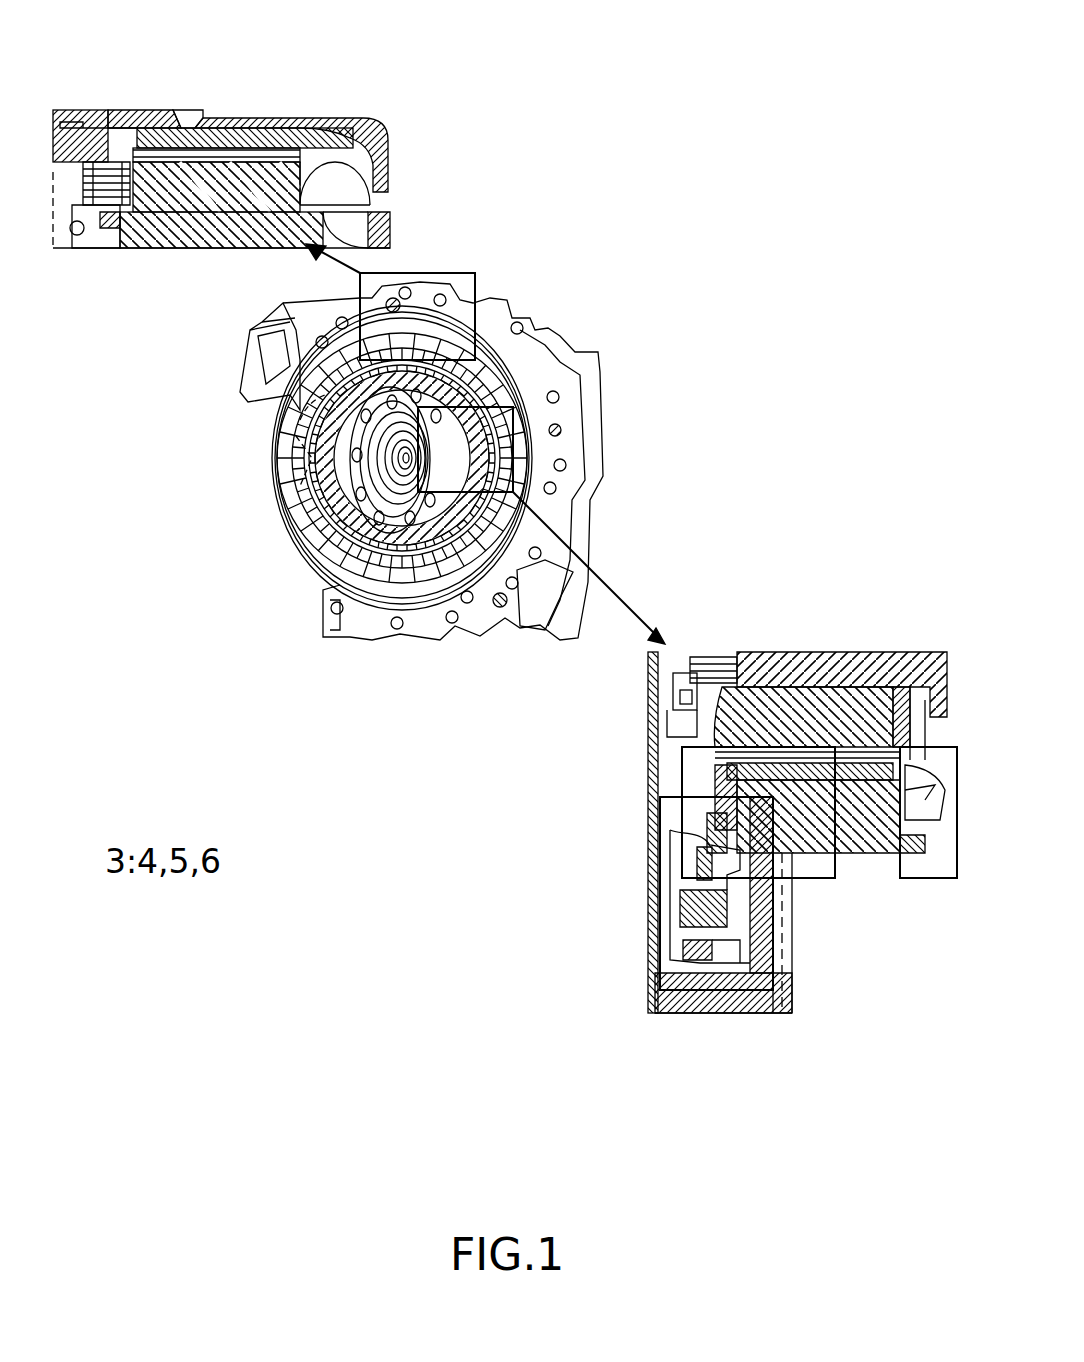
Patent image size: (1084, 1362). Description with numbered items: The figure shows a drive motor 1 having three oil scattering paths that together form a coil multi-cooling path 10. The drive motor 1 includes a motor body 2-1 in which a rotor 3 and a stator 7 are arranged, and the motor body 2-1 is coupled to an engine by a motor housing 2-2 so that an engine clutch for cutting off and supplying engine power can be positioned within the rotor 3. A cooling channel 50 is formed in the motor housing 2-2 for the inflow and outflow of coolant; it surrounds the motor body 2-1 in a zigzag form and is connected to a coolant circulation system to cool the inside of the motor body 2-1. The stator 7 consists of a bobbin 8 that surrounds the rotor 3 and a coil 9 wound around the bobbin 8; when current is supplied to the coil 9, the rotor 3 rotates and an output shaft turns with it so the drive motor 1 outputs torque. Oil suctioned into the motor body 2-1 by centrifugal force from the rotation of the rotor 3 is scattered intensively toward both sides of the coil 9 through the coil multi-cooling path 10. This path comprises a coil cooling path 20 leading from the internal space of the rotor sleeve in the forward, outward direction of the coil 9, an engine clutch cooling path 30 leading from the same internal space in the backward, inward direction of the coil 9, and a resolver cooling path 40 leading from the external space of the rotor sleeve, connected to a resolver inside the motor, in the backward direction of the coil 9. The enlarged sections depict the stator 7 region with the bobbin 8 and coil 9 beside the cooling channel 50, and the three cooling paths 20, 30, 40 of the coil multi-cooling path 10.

The drive motor 1 is at (588, 297).
The motor body 2-1 is at (570, 360).
The motor housing 2-2 is at (314, 130).
The cooling channel 50 is at (188, 132).
The rotor 3 is at (284, 468).
The stator 7 is at (404, 716).
The bobbin 8 is at (392, 622).
The coil 9 is at (354, 620).
The coil multi-cooling path 10 is at (898, 1113).
The coil cooling path 20 is at (930, 880).
The engine clutch cooling path 30 is at (808, 880).
The resolver cooling path 40 is at (770, 1013).